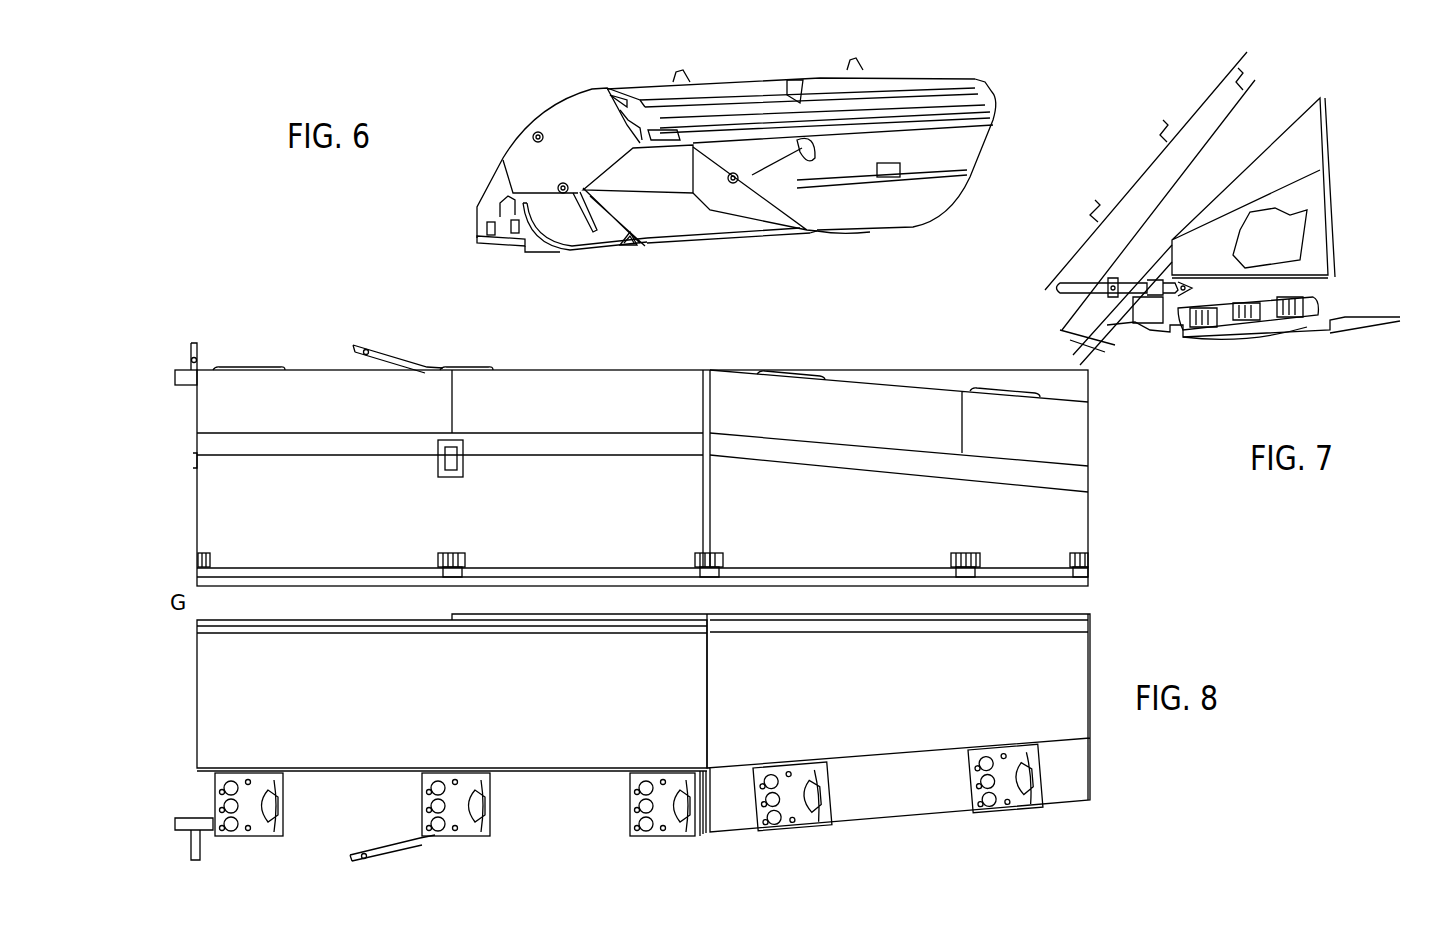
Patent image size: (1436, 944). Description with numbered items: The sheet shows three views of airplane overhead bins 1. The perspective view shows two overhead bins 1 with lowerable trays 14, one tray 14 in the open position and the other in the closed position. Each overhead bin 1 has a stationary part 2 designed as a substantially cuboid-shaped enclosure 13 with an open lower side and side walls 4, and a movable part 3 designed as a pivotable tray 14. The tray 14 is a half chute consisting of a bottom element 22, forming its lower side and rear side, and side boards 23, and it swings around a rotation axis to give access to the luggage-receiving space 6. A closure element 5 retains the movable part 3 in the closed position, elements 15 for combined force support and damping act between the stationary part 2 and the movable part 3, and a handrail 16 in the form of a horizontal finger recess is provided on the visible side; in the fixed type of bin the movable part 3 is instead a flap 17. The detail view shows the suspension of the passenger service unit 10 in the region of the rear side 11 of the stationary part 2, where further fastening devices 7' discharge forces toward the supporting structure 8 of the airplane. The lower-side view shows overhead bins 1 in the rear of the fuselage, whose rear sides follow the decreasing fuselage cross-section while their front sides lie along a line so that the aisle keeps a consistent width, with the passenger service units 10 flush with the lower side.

In FIG. 6, the overhead bin 1 is at (563, 126).
In FIG. 7, the overhead bin 1 is at (556, 475).
In FIG. 8, the overhead bin 1 is at (632, 737).
In FIG. 6, the stationary part 2 is at (577, 97).
In FIG. 7, the stationary part 2 is at (1330, 217).
In FIG. 6, the movable part 3 is at (780, 238).
In FIG. 6, the side wall 4 is at (533, 162).
In FIG. 6, the closure element 5 is at (887, 163).
In FIG. 6, the luggage-receiving space 6 is at (682, 167).
In FIG. 7, the fastening device 7' is at (683, 289).
In FIG. 7, the supporting structure 8 is at (1145, 153).
In FIG. 7, the passenger service unit 10 is at (1275, 332).
In FIG. 8, the passenger service unit 10 is at (657, 817).
In FIG. 7, the rear side 11 is at (1200, 217).
In FIG. 6, the enclosure 13 is at (608, 90).
In FIG. 6, the tray 14 is at (678, 202).
In FIG. 6, the element for combined force support and damping 15 is at (580, 202).
In FIG. 6, the handrail 16 is at (963, 180).
In FIG. 6, the flap 17 is at (657, 225).
In FIG. 6, the bottom element 22 is at (718, 227).
In FIG. 6, the side board 23 is at (603, 238).